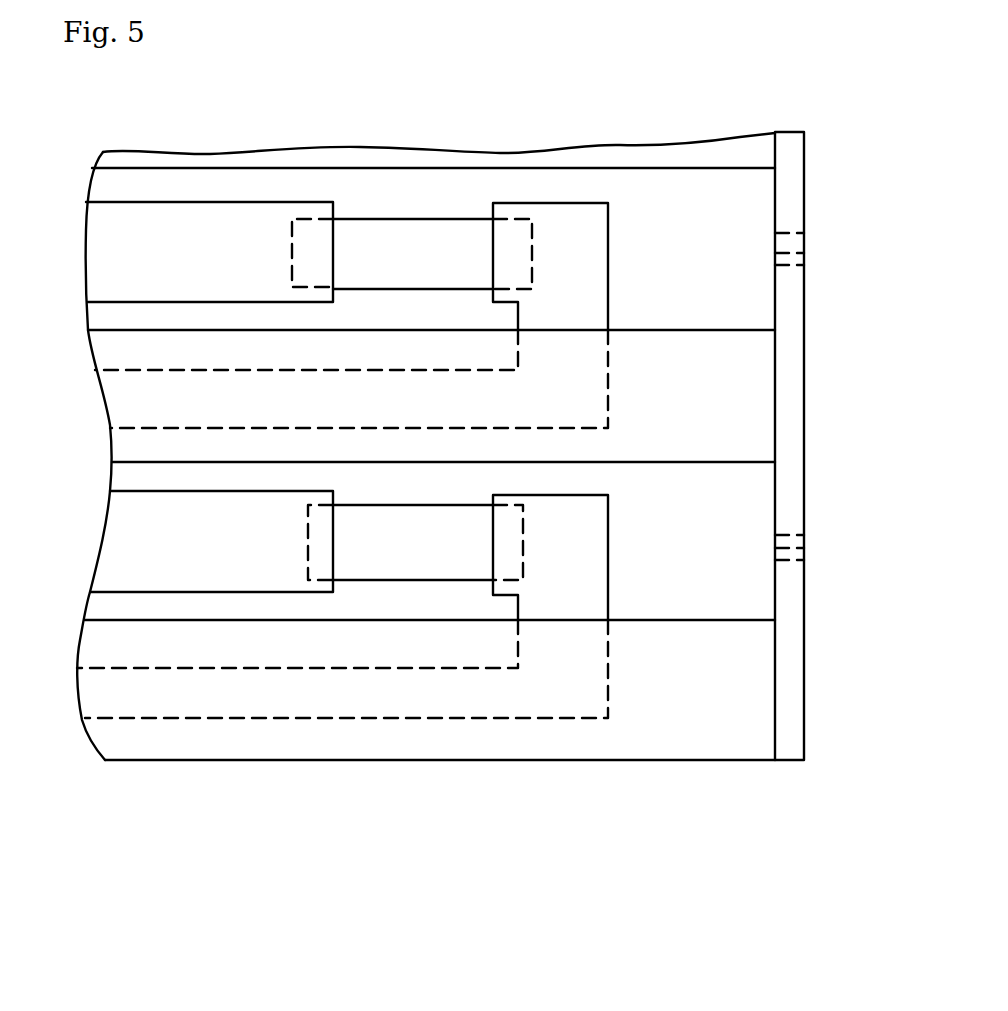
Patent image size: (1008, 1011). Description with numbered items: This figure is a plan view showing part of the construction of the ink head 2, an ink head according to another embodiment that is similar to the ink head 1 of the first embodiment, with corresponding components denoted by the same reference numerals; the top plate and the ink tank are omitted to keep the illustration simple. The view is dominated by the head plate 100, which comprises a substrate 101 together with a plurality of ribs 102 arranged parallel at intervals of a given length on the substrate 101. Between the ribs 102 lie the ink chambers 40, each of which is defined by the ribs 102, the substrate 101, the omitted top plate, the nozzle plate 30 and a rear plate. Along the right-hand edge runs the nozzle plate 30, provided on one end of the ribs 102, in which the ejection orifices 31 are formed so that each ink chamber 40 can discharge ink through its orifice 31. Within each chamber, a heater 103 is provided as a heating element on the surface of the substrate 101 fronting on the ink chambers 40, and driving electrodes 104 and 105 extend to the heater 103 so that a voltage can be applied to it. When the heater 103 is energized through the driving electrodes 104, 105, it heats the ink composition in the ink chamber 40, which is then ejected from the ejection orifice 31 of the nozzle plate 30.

The ink head 1 is at (90, 538).
The ink head 2 is at (441, 79).
The nozzle plate 30 is at (791, 165).
The ejection orifices 31 is at (790, 253).
The ink chambers 40 is at (670, 244).
The head plate 100 is at (298, 123).
The substrate 101 is at (705, 766).
The ribs 102 is at (743, 411).
The heater 103 is at (410, 240).
The driving electrode 104 is at (195, 232).
The driving electrode 105 is at (555, 250).